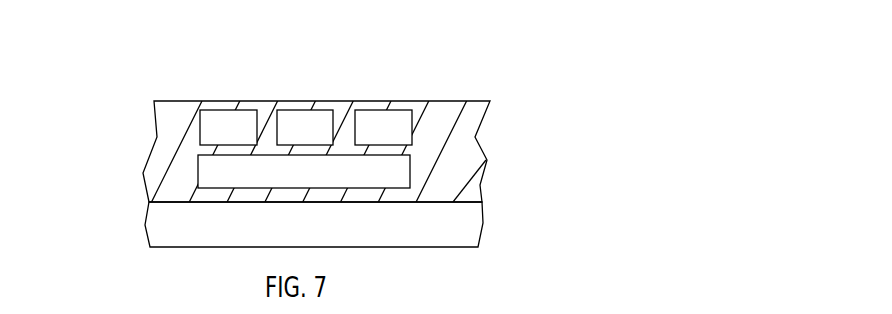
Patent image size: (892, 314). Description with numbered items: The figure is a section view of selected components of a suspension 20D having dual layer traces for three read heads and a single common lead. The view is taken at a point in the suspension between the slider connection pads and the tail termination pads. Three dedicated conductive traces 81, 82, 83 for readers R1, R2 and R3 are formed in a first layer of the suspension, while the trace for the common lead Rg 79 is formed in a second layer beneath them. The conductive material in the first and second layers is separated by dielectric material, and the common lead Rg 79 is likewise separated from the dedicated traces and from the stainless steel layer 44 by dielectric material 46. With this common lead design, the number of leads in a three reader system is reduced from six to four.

The suspension 20D is at (136, 112).
The dielectric material 46 is at (473, 128).
The stainless steel layer 44 is at (443, 238).
The dedicated conductive trace 81 is at (213, 115).
The dedicated conductive trace 82 is at (288, 115).
The dedicated conductive trace 83 is at (368, 113).
The common lead Rg 79 is at (349, 180).